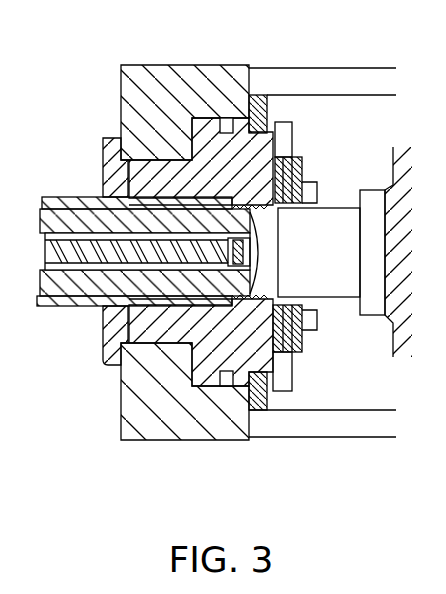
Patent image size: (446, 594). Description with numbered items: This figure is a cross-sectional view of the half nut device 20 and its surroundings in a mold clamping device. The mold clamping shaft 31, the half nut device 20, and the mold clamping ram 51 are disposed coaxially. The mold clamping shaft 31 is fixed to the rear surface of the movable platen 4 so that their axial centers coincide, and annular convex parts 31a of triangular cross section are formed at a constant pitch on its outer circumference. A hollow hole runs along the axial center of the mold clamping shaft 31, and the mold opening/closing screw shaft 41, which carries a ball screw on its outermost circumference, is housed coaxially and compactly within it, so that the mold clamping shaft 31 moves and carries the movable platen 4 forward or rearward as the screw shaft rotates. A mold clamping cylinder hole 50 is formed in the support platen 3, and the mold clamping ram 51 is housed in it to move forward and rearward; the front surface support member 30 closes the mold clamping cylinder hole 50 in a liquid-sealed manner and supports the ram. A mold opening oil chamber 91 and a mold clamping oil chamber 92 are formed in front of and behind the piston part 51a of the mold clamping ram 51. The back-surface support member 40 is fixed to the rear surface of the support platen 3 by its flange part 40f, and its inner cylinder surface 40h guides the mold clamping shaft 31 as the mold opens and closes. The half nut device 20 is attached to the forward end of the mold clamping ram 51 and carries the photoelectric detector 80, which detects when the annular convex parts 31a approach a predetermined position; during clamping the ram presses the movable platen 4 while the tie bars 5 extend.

The support platen 3 is at (169, 93).
The movable platen 4 is at (380, 352).
The tie bars 5 is at (364, 67).
The half nut device 20 is at (295, 148).
The front surface support member 30 is at (308, 430).
The mold clamping shaft 31 is at (328, 216).
The annular convex parts 31a is at (150, 122).
The back-surface support member 40 is at (58, 196).
The flange part 40f is at (104, 139).
The inner cylinder surface 40h is at (118, 352).
The mold opening/closing screw shaft 41 is at (108, 309).
The mold clamping cylinder hole 50 is at (255, 420).
The mold clamping ram 51 is at (138, 188).
The piston part 51a is at (225, 117).
The photoelectric detector 80 is at (306, 176).
The mold opening oil chamber 91 is at (262, 108).
The mold clamping oil chamber 92 is at (157, 68).